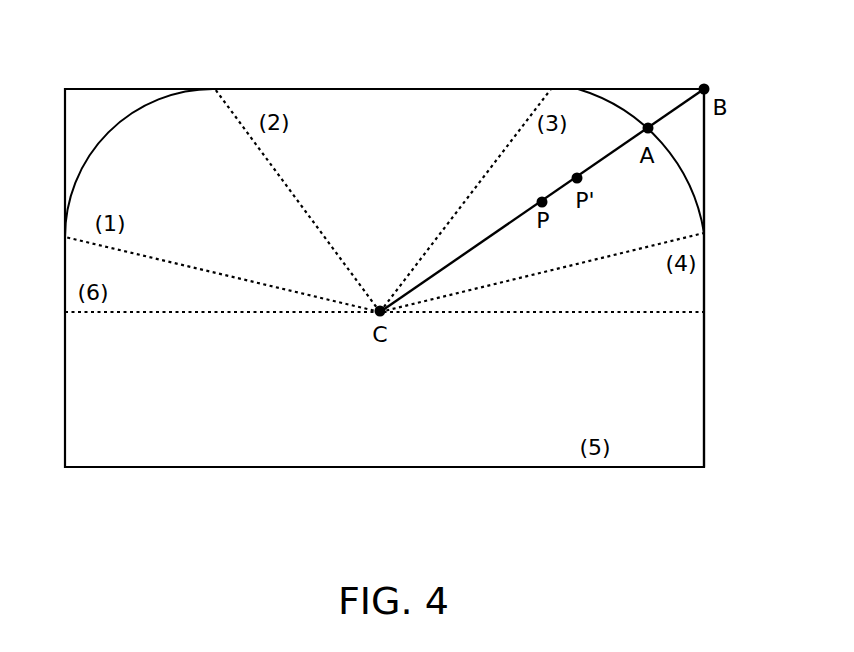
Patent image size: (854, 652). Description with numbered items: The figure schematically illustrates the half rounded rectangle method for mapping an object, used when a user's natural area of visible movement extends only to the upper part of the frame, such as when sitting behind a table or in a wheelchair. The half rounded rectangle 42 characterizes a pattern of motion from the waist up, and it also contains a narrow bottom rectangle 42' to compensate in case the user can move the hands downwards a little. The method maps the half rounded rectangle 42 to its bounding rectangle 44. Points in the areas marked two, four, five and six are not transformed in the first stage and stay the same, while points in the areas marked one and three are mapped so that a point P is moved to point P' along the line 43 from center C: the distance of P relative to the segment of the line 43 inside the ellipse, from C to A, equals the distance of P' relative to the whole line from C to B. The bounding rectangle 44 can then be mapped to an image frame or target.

The bounding rectangle 44 is at (118, 89).
The half rounded rectangle 42 is at (362, 163).
The bottom rectangle 42' is at (731, 278).
The line 43 is at (490, 236).